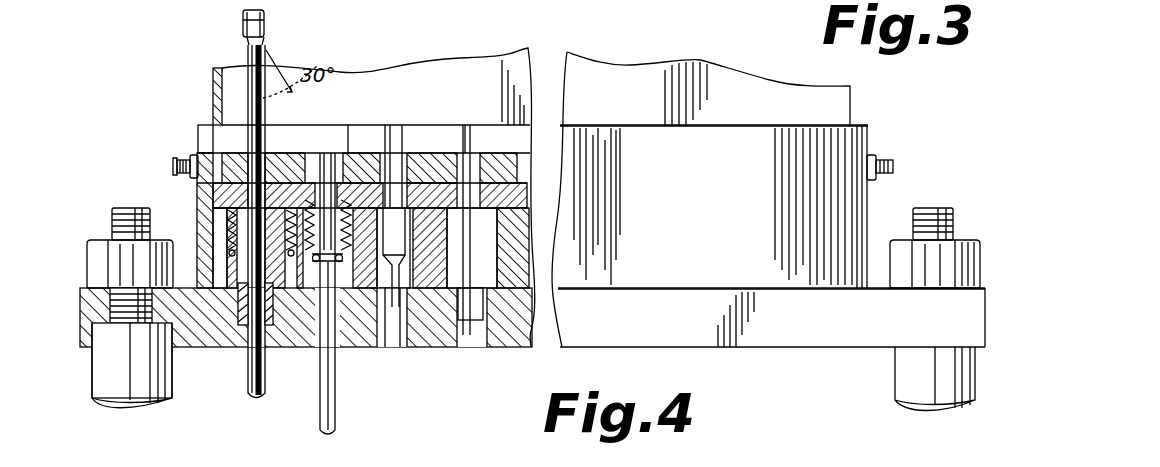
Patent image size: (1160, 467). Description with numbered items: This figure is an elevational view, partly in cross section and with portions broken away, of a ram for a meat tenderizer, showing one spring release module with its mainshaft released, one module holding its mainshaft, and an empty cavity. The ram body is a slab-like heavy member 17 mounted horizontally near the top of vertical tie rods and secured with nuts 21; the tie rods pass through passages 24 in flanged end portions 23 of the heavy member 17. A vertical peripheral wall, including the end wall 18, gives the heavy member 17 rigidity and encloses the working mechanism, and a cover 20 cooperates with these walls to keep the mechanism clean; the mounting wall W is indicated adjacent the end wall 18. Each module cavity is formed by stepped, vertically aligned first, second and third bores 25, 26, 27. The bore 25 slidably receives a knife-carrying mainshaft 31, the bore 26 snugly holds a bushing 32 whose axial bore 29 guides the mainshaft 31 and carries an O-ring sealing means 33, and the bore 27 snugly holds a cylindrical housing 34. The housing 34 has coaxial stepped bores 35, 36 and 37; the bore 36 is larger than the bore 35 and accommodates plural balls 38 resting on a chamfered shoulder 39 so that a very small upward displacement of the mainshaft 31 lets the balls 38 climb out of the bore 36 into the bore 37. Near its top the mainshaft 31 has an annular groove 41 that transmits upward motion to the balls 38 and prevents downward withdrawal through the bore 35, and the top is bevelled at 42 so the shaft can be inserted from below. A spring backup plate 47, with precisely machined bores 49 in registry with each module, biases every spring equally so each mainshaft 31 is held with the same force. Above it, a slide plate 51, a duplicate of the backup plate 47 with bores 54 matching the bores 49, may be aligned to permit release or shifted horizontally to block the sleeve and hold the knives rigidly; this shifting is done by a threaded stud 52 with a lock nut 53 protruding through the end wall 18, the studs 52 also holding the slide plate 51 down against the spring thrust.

The heavy member 17 is at (655, 290).
The end wall 18 is at (217, 125).
The cover 20 is at (732, 74).
The nut 21 is at (102, 243).
The flanged end portion 23 is at (972, 312).
The passage 24 is at (120, 298).
The first bore 25 is at (392, 318).
The second bore 26 is at (468, 300).
The third bore 27 is at (497, 245).
The axial bore 29 is at (366, 318).
The mainshaft 31 is at (335, 414).
The bushing 32 is at (238, 318).
The O-ring sealing means 33 is at (315, 325).
The cylindrical housing 34 is at (447, 236).
The first bore of housing 35 is at (393, 257).
The second bore of housing 36 is at (398, 295).
The third bore of housing 37 is at (388, 139).
The balls 38 is at (295, 318).
The shoulder 39 is at (400, 150).
The annular groove 41 is at (265, 43).
The bevel 42 is at (264, 11).
The spring backup plate 47 is at (348, 153).
The bore in backup plate 49 is at (492, 141).
The slide plate 51 is at (519, 95).
The threaded stud 52 is at (178, 165).
The lock nut 53 is at (196, 156).
The bore in slide plate 54 is at (470, 160).
The wall W is at (205, 200).